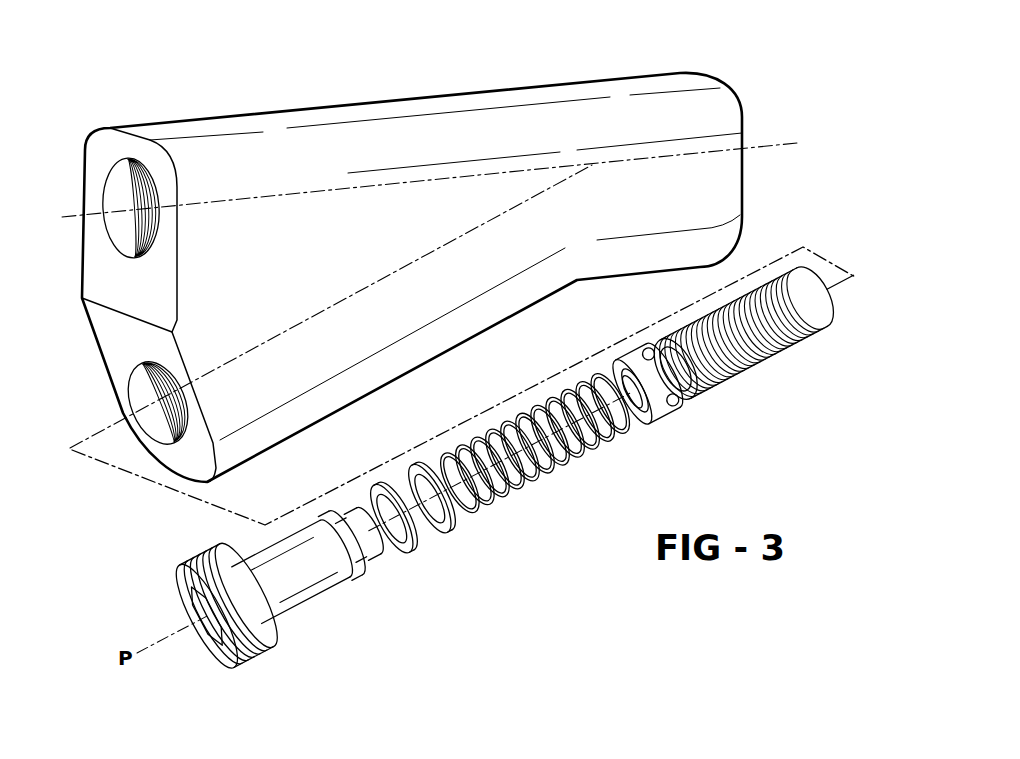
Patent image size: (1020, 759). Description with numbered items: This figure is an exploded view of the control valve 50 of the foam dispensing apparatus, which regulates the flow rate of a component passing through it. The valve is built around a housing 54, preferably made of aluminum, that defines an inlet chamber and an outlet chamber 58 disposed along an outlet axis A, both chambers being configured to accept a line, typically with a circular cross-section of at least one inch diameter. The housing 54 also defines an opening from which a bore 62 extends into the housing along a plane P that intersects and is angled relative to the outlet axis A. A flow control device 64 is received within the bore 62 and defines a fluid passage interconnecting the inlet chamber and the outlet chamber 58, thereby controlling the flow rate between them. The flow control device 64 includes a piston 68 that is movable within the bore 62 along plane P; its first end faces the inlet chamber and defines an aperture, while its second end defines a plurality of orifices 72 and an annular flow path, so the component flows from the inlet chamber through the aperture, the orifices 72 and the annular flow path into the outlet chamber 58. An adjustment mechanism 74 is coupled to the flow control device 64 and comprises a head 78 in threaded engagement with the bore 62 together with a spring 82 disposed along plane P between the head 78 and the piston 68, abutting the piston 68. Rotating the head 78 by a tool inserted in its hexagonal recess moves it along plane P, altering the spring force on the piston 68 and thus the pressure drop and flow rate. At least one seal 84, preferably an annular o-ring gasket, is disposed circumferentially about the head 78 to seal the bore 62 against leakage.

The control valve 50 is at (763, 43).
The housing 54 is at (202, 147).
The outlet chamber 58 is at (112, 230).
The bore 62 is at (147, 387).
The flow control device 64 is at (712, 407).
The piston 68 is at (808, 330).
The orifice 72 is at (680, 388).
The adjustment mechanism 74 is at (365, 590).
The head 78 is at (248, 657).
The spring 82 is at (562, 474).
The seal 84 is at (452, 547).